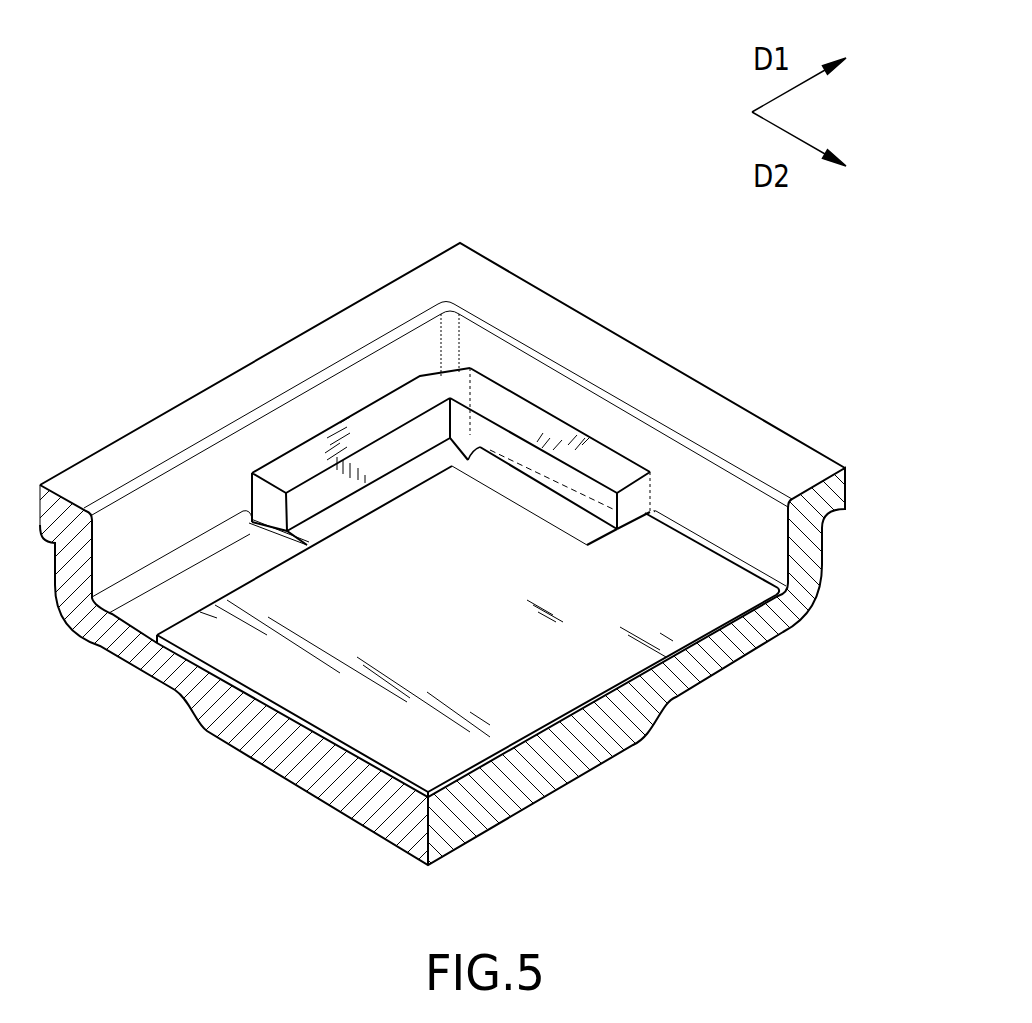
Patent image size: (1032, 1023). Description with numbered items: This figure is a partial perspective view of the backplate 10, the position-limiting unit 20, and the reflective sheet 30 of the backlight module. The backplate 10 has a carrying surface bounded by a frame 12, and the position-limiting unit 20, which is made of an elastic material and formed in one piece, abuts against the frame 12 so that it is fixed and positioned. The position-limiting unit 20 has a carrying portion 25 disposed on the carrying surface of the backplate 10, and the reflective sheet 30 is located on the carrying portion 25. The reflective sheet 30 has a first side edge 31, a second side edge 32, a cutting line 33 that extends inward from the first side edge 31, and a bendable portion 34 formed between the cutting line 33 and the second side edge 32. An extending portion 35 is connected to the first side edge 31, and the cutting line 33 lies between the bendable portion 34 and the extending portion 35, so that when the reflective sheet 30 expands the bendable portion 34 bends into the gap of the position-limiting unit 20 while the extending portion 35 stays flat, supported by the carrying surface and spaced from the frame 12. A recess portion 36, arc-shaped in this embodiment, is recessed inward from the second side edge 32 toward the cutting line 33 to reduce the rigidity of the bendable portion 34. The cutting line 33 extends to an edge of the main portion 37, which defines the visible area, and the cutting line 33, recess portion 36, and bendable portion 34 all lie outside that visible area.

The backplate 10 is at (393, 248).
The frame 12 is at (730, 423).
The position-limiting unit 20 is at (268, 430).
The carrying portion 25 is at (600, 460).
The reflective sheet 30 is at (283, 700).
The first side edge 31 is at (730, 560).
The second side edge 32 is at (382, 505).
The cutting line 33 is at (595, 537).
The bendable portion 34 is at (527, 487).
The extending portion 35 is at (730, 594).
The recess portion 36 is at (469, 462).
The main portion 37 is at (507, 693).